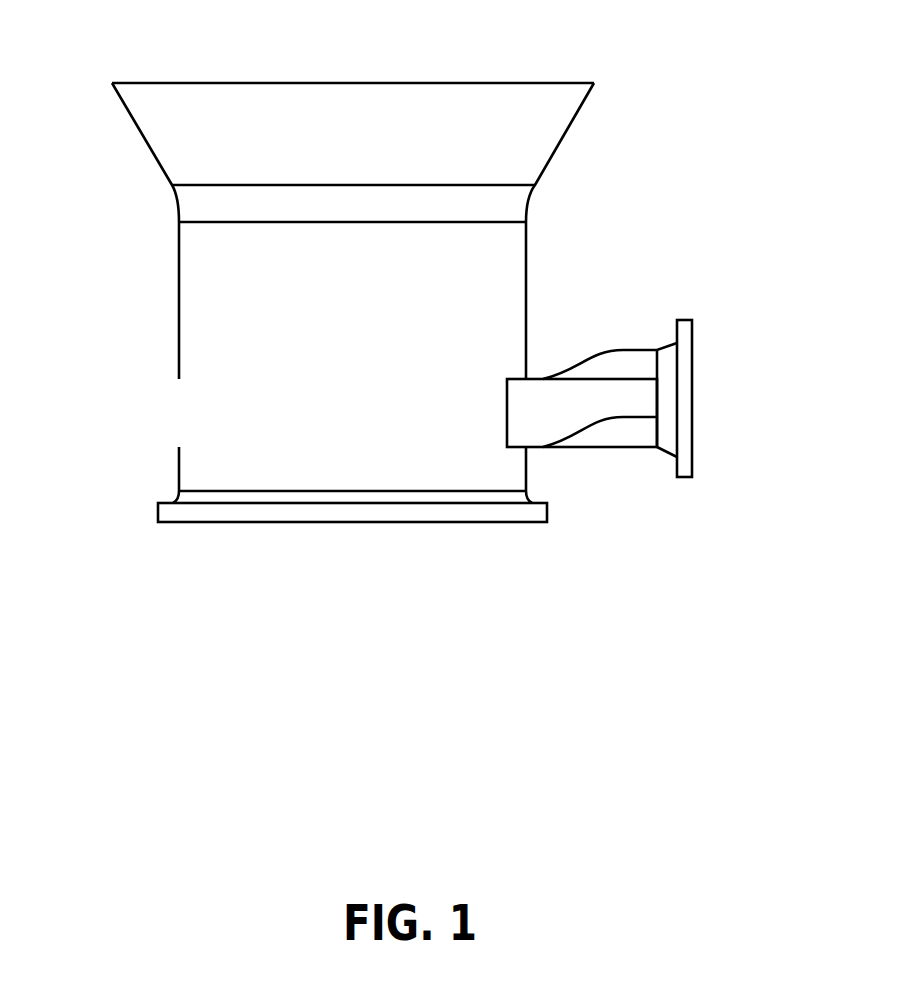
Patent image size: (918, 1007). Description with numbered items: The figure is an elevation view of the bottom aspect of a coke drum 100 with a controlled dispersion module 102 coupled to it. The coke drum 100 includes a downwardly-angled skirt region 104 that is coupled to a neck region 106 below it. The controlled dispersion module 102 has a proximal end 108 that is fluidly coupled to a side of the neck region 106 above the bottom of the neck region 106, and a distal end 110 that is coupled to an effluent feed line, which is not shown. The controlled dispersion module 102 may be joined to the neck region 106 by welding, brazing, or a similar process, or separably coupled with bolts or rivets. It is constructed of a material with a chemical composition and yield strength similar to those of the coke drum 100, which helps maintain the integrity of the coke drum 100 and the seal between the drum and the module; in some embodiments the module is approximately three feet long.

The coke drum 100 is at (723, 118).
The controlled dispersion module 102 is at (637, 350).
The downwardly-angled skirt region 104 is at (141, 132).
The neck region 106 is at (178, 417).
The proximal end 108 is at (508, 397).
The distal end 110 is at (692, 347).